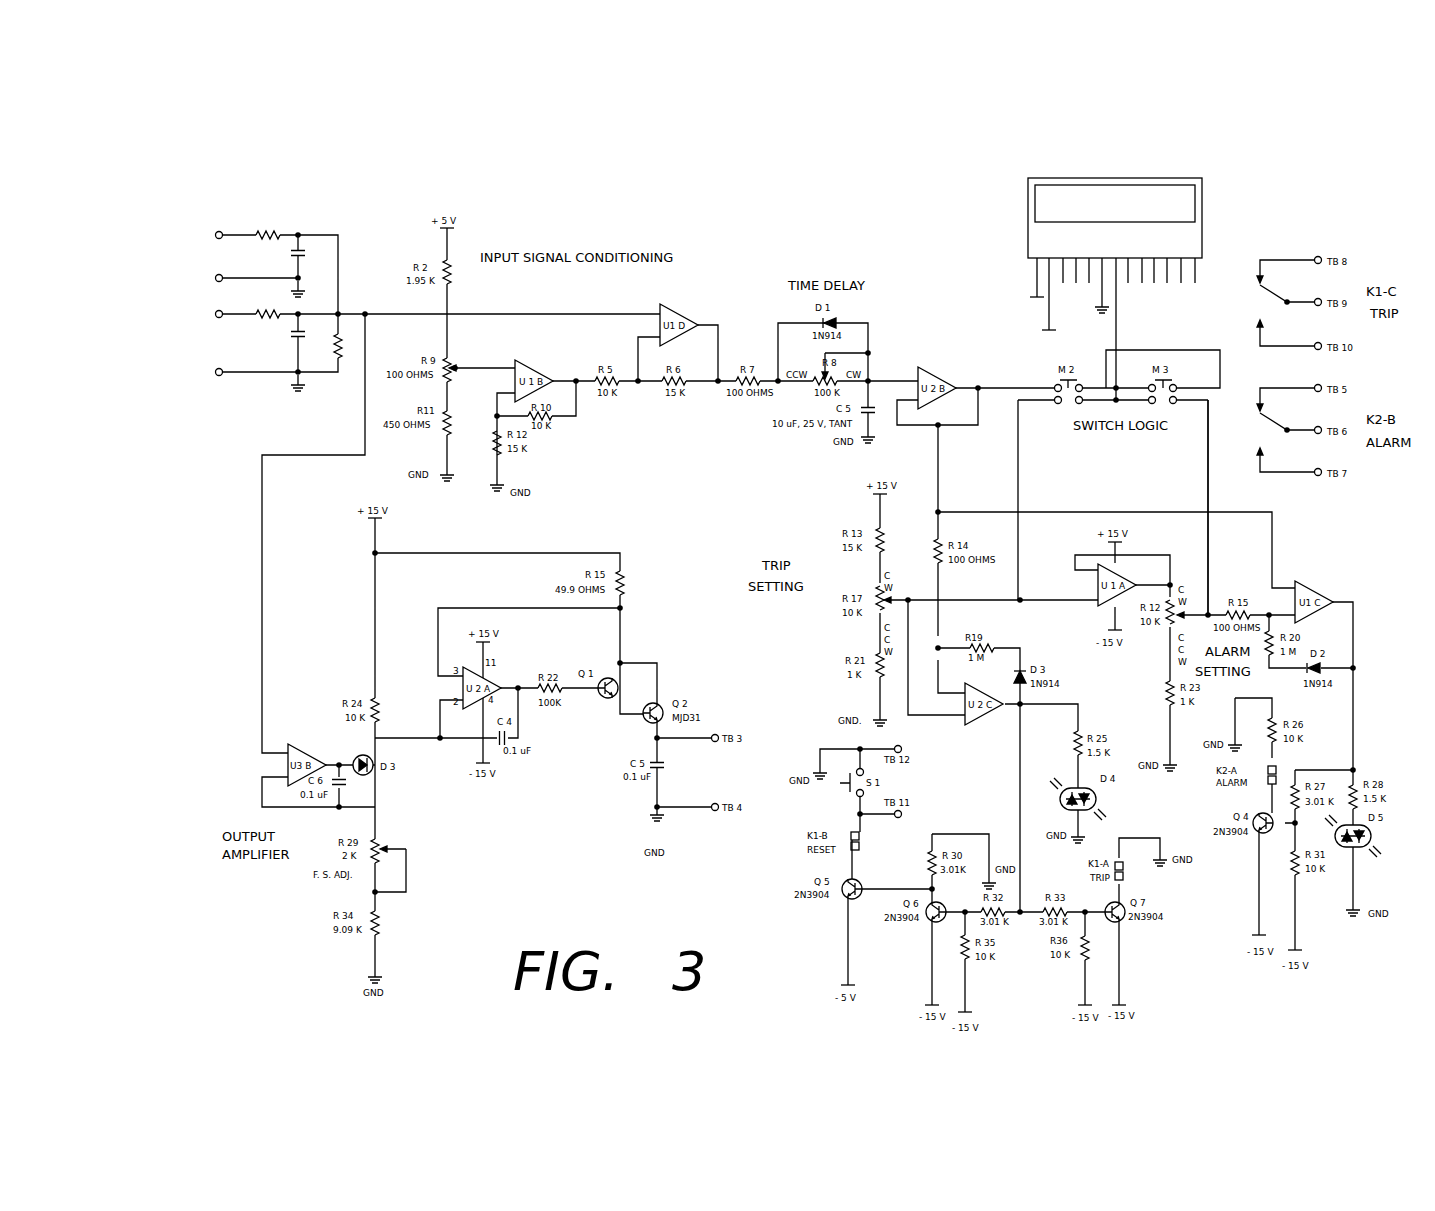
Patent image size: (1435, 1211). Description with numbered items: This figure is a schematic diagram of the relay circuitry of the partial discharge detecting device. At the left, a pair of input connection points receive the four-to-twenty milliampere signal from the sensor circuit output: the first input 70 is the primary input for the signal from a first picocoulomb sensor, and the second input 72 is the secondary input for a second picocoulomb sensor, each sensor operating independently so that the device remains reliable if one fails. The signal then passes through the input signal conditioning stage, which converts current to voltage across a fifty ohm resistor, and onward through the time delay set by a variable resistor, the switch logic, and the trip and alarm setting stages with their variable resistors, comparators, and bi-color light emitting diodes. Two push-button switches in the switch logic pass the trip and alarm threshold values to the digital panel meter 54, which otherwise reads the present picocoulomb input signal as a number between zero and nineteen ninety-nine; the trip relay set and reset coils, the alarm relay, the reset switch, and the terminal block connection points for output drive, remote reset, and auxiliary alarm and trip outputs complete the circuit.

The second input 72 is at (208, 228).
The first input 70 is at (208, 314).
The digital panel meter 54 is at (1202, 206).